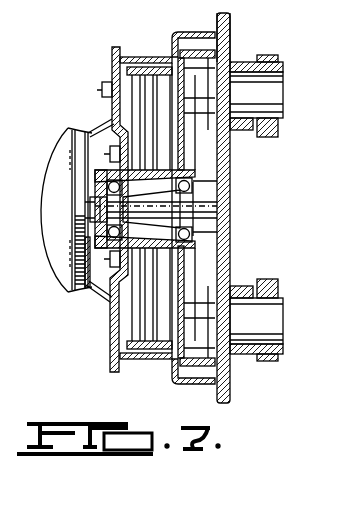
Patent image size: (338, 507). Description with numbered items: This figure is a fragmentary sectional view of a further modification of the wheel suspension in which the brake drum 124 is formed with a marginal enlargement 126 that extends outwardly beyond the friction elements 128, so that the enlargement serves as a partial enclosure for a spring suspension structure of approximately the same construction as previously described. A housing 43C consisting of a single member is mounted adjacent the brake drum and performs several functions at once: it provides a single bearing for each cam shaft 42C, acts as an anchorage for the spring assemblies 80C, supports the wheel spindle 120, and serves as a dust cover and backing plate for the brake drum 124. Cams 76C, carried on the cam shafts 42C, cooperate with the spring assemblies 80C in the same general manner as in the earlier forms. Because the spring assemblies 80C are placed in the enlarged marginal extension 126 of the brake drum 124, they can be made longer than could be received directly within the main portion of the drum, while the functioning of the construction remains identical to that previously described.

The brake drum 124 is at (143, 57).
The marginal enlargement 126 is at (193, 33).
The friction elements 128 is at (147, 107).
The housing 43C is at (237, 31).
The cam 76C is at (232, 62).
The cam shaft 42C is at (278, 80).
The spring assemblies 80C is at (205, 160).
The wheel spindle 120 is at (203, 200).